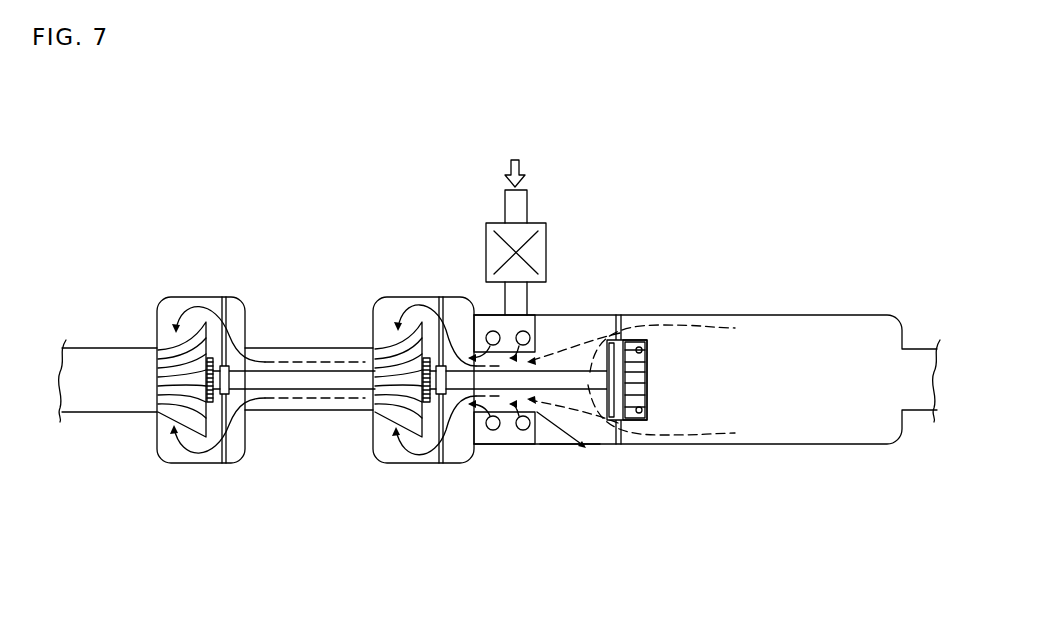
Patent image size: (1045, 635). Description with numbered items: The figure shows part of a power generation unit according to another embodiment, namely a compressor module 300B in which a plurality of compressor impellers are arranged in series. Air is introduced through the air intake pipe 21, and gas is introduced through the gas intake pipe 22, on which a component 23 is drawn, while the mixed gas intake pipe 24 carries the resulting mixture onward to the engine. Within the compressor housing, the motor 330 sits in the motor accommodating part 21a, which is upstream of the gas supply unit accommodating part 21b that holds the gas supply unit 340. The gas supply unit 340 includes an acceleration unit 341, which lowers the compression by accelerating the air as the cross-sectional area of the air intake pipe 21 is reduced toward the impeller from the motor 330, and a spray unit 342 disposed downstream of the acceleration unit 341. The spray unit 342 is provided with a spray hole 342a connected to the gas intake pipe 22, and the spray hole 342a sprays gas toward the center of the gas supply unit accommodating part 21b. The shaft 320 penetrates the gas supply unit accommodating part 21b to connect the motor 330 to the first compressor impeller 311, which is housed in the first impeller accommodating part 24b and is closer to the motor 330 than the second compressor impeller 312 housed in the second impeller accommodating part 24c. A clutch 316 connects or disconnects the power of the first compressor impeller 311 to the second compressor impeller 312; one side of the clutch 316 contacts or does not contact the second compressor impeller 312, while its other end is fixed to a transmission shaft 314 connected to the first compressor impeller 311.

The compressor module 300B is at (499, 330).
The mixed gas intake pipe 24 is at (107, 355).
The second impeller accommodating part 24c is at (201, 434).
The first impeller accommodating part 24b is at (423, 422).
The transmission shaft 314 is at (294, 349).
The clutch 316 is at (228, 329).
The second compressor impeller 312 is at (190, 409).
The first compressor impeller 311 is at (409, 411).
The gas intake pipe 22 is at (550, 252).
The valve 23 is at (550, 249).
The air intake pipe 21 is at (707, 421).
The motor accommodating part 21a is at (631, 421).
The gas supply unit accommodating part 21b is at (570, 486).
The gas supply unit 340 is at (562, 399).
The acceleration unit 341 is at (548, 363).
The spray unit 342 is at (544, 304).
The spray hole 342a is at (507, 483).
The shaft 320 is at (527, 435).
The motor 330 is at (667, 348).